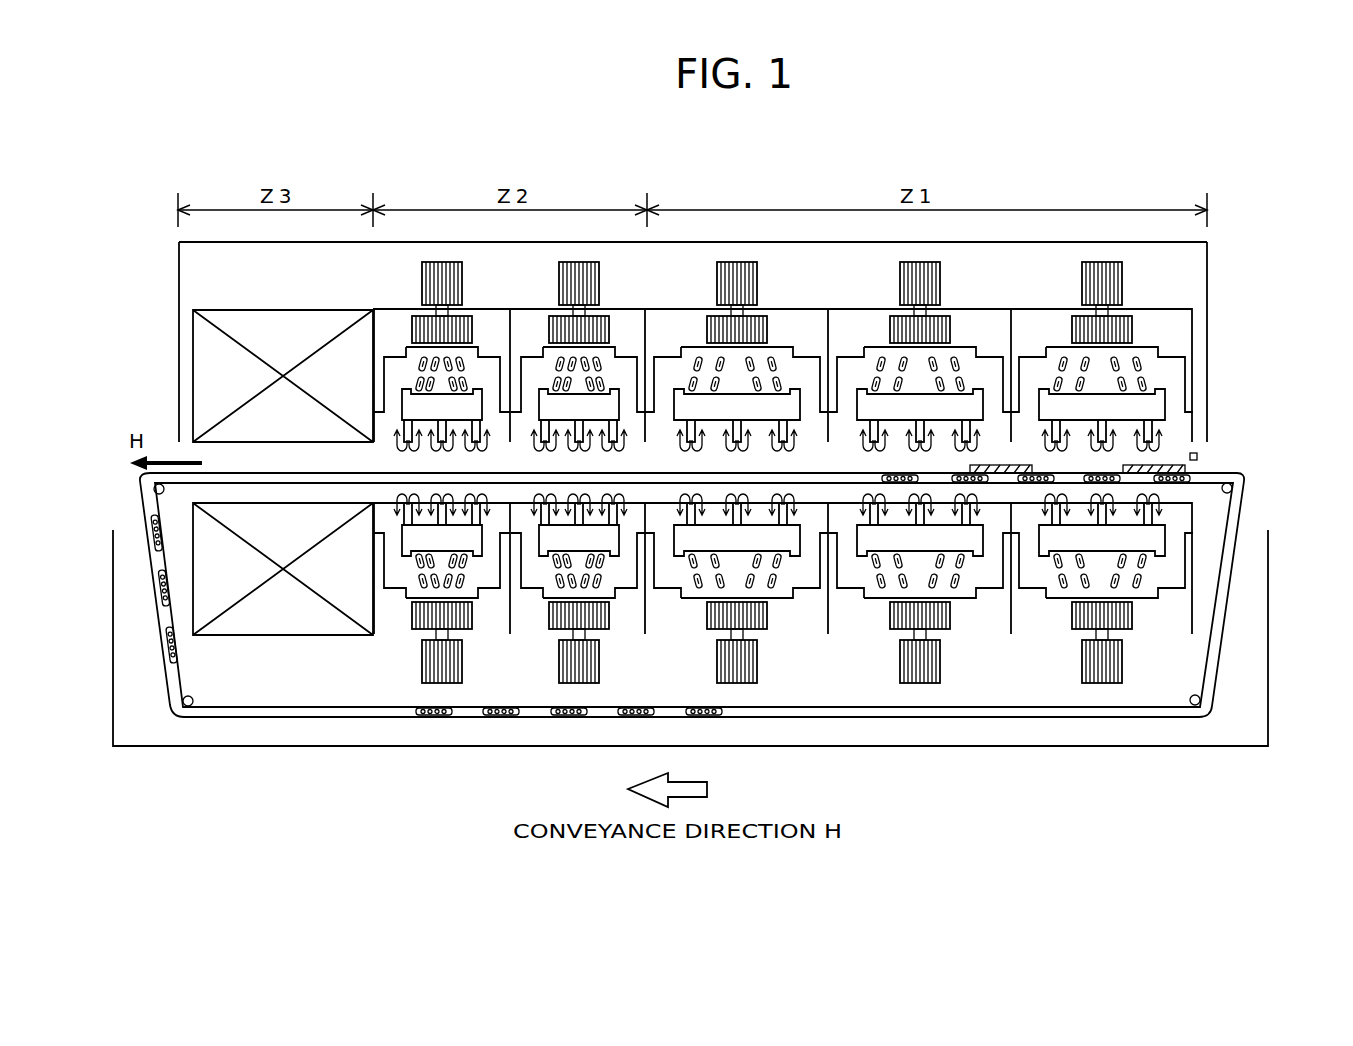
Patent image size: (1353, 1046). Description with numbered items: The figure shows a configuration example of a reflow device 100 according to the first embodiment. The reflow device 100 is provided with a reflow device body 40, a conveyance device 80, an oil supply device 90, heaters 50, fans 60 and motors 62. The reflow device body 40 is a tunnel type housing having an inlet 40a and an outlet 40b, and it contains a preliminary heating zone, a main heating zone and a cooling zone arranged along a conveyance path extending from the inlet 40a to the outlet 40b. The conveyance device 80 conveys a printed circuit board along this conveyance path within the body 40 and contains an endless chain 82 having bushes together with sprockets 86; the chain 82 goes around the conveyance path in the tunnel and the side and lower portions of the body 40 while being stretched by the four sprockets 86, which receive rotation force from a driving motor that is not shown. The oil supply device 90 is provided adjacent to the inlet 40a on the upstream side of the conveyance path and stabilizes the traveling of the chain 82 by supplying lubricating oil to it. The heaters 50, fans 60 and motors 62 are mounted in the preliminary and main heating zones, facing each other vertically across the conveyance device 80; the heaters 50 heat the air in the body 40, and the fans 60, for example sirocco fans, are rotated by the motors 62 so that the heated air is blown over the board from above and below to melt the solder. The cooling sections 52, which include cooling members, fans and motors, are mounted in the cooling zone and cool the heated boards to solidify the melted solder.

The reflow device 100 is at (440, 146).
The reflow device body 40 is at (179, 291).
The inlet 40a is at (1221, 440).
The outlet 40b is at (161, 424).
The heater 50 is at (1148, 373).
The cooling section 52 is at (287, 310).
The fan 60 is at (1132, 330).
The motor 62 is at (1122, 283).
The conveyance device 80 is at (1243, 513).
The chain 82 is at (152, 537).
The sprocket 86 is at (143, 476).
The oil supply device 90 is at (1197, 456).